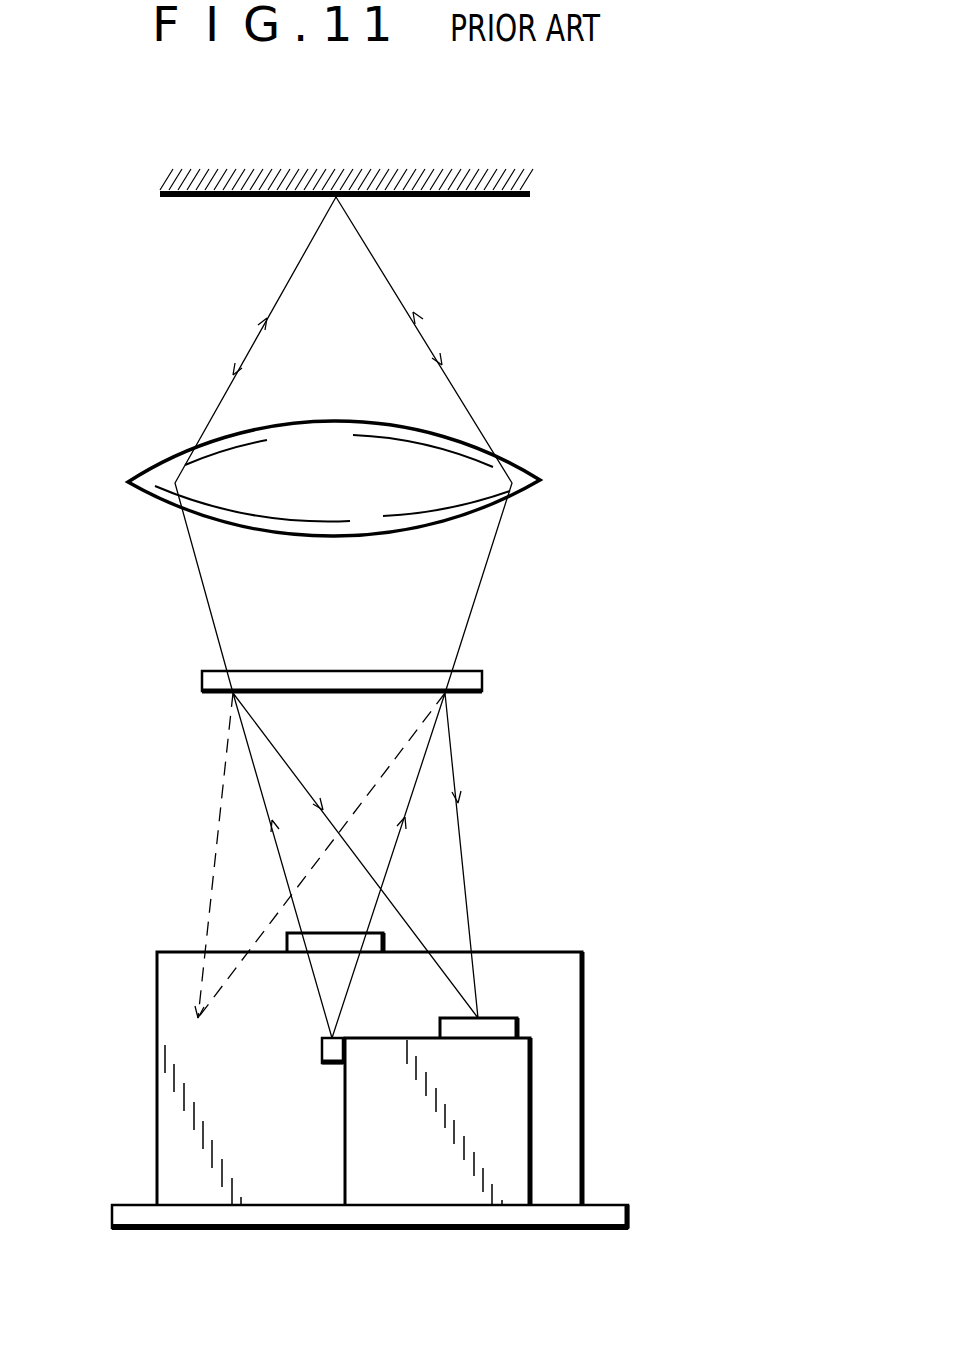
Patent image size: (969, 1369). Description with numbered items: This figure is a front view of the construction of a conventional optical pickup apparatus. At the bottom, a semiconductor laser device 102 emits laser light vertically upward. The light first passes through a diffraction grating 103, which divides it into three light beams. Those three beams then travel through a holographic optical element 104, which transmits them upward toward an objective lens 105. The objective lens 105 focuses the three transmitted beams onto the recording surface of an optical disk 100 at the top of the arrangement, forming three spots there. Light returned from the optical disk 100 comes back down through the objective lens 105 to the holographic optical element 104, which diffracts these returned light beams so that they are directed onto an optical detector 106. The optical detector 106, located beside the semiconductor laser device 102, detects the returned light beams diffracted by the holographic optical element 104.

The optical disk 100 is at (520, 178).
The semiconductor laser device 102 is at (322, 1052).
The diffraction grating 103 is at (287, 938).
The holographic optical element 104 is at (483, 675).
The objective lens 105 is at (528, 478).
The optical detector 106 is at (520, 1025).